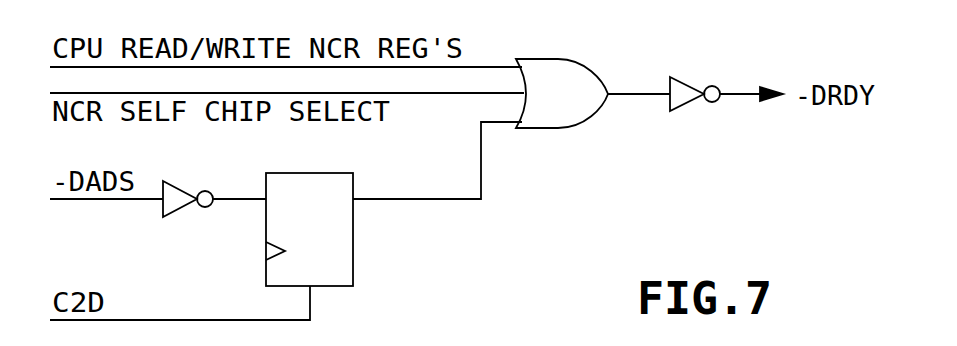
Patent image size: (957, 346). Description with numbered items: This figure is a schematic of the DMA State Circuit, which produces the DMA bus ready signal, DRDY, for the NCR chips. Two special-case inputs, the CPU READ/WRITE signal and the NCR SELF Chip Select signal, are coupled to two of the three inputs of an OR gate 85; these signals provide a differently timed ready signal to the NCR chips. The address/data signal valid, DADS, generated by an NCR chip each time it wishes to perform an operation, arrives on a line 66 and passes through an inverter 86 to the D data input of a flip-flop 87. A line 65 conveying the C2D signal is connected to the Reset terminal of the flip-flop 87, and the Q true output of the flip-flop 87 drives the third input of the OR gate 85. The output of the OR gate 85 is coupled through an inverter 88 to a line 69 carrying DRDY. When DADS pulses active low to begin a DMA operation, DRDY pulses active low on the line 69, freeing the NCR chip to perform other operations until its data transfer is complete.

The line 65 is at (484, 67).
The line 66 is at (453, 93).
The OR gate 85 is at (558, 128).
The inverter 86 is at (170, 208).
The flip-flop 87 is at (347, 247).
The inverter 88 is at (685, 105).
The line 69 is at (745, 94).